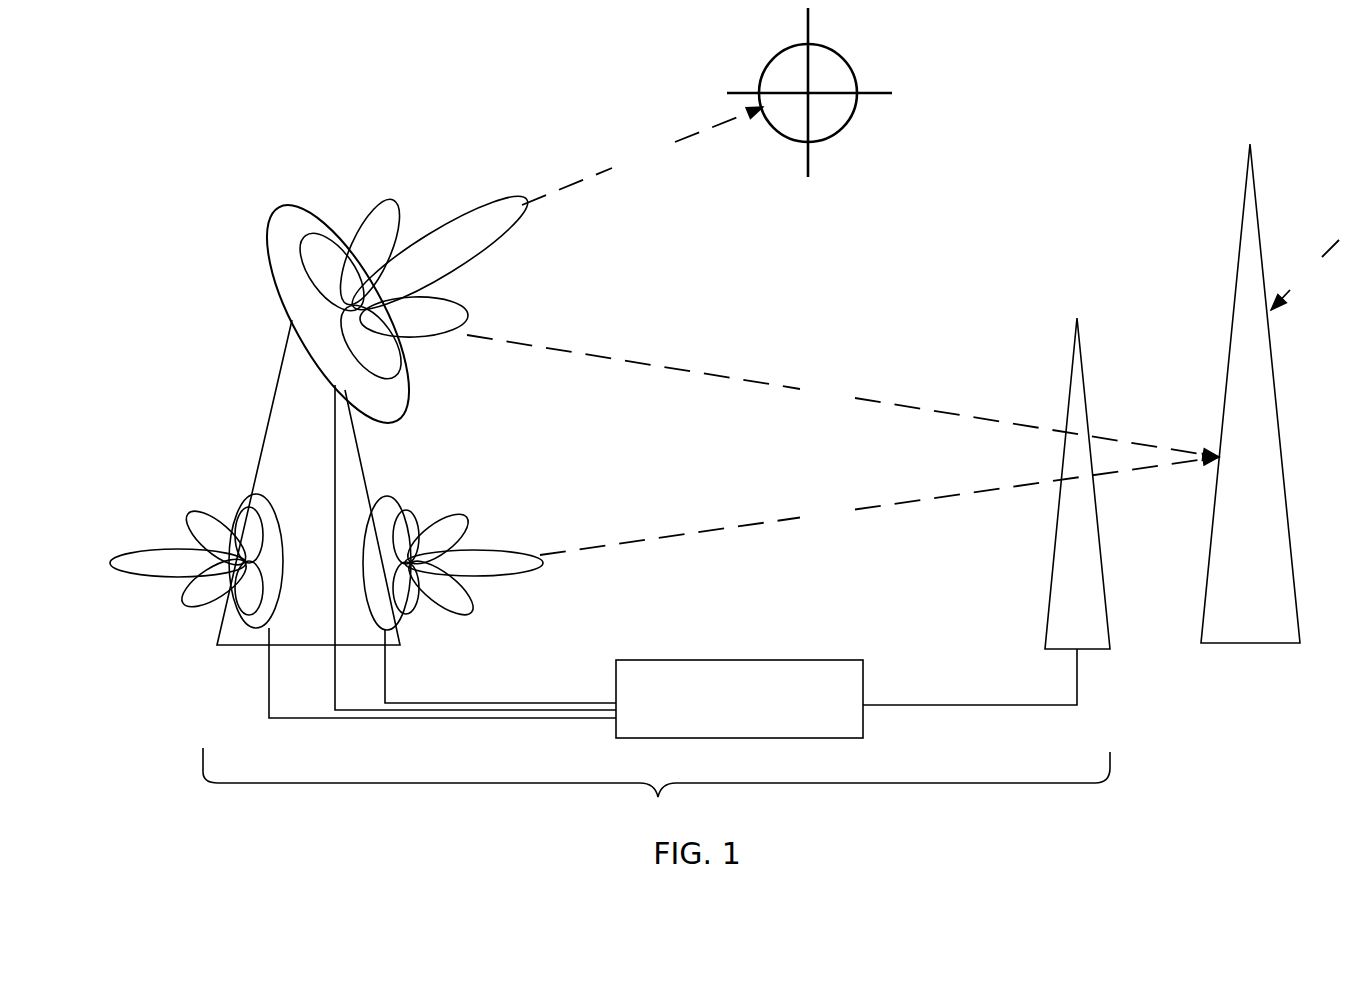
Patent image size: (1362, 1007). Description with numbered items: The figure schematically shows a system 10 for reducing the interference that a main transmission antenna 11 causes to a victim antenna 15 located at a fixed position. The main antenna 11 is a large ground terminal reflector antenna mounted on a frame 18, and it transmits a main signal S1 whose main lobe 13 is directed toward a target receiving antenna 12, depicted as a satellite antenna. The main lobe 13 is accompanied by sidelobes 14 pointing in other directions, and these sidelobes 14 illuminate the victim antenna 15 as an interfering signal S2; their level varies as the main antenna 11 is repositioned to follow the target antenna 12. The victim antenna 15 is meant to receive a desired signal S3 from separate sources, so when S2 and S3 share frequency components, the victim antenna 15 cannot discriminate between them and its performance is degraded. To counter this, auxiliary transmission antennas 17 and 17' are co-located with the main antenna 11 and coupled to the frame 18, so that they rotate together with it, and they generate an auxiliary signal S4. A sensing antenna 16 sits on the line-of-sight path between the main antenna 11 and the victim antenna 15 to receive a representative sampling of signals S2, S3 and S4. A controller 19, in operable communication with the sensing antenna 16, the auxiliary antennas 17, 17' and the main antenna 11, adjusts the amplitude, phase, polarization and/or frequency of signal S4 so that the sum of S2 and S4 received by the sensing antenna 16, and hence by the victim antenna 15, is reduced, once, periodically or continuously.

The system 10 is at (656, 787).
The main transmission antenna 11 is at (285, 262).
The target receiving antenna 12 is at (850, 57).
The main lobe 13 is at (477, 220).
The sidelobes 14 is at (363, 232).
The victim antenna 15 is at (1242, 225).
The sensing antenna 16 is at (1083, 386).
The auxiliary transmission antenna 17 is at (453, 508).
The auxiliary transmission antenna 17' is at (196, 507).
The frame 18 is at (277, 420).
The controller 19 is at (802, 660).
The main signal S1 is at (642, 156).
The interfering signal S2 is at (843, 397).
The desired signal S3 is at (1305, 275).
The auxiliary signal S4 is at (879, 504).